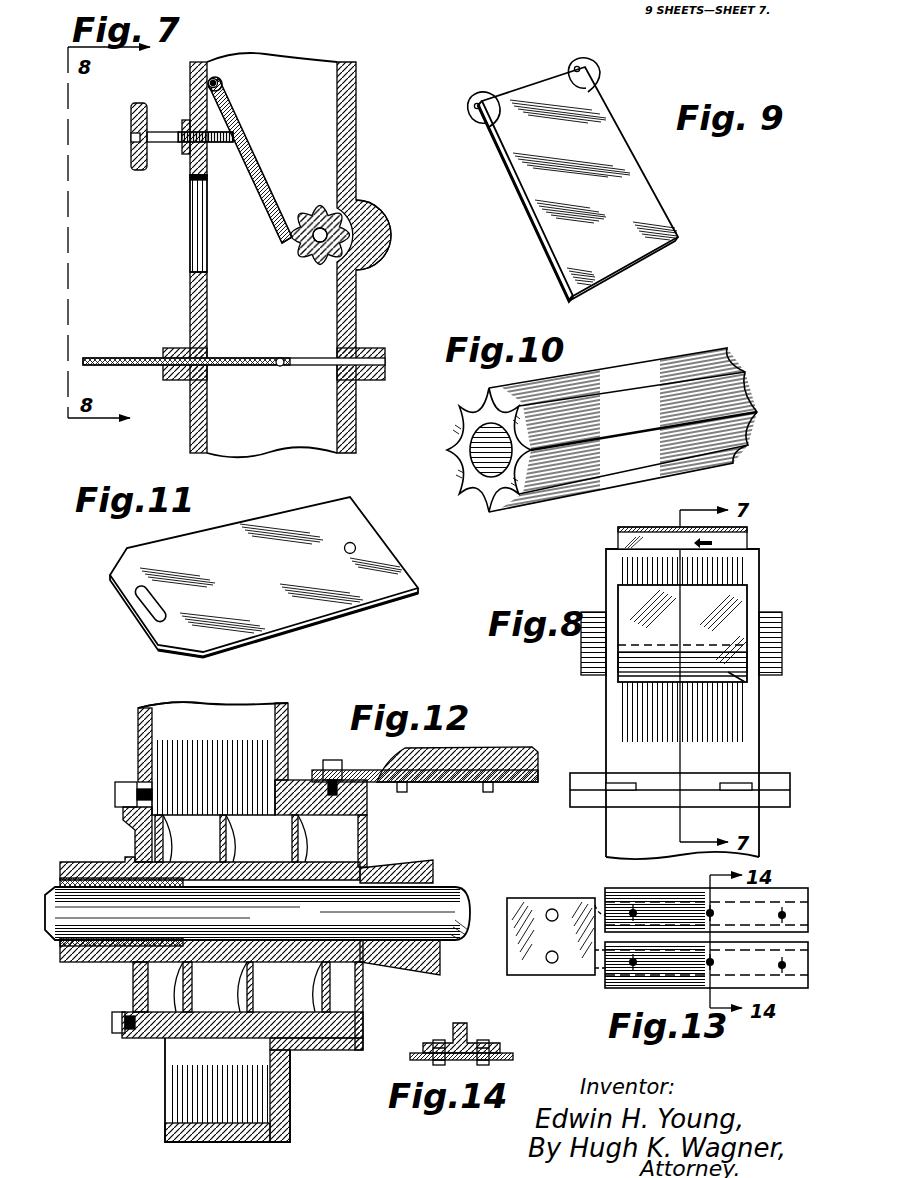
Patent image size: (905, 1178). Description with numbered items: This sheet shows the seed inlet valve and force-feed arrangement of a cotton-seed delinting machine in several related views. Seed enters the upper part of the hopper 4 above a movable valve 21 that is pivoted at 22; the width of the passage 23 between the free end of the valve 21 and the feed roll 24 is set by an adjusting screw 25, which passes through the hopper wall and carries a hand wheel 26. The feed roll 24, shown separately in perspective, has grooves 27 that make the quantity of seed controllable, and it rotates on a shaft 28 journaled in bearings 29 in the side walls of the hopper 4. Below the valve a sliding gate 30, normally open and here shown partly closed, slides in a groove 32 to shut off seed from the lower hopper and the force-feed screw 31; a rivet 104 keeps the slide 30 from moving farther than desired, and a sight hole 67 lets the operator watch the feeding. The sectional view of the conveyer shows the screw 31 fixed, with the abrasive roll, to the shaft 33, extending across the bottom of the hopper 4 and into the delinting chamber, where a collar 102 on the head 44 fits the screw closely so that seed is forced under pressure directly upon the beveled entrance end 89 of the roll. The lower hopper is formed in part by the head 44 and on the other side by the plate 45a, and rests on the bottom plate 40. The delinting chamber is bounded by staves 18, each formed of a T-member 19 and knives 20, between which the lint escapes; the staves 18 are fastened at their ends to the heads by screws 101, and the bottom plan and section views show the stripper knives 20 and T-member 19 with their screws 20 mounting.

In FIG. 7, the hopper 4 is at (316, 80).
In FIG. 8, the hopper 4 is at (759, 597).
In FIG. 12, the hopper 4 is at (213, 758).
In FIG. 12, the staves 18 is at (348, 772).
In FIG. 13, the staves 18 is at (556, 936).
In FIG. 14, the staves 18 is at (470, 1066).
In FIG. 12, the T-member 19 is at (470, 752).
In FIG. 14, the T-member 19 is at (465, 1030).
In FIG. 12, the knives 20 is at (442, 794).
In FIG. 13, the knives 20 is at (706, 938).
In FIG. 14, the knives 20 is at (430, 1058).
In FIG. 7, the movable valve 21 is at (262, 180).
In FIG. 9, the movable valve 21 is at (573, 179).
In FIG. 8, the movable valve 21 is at (740, 546).
In FIG. 7, the pivot 22 is at (215, 78).
In FIG. 7, the passage 23 is at (285, 248).
In FIG. 7, the feed roll 24 is at (318, 263).
In FIG. 10, the feed roll 24 is at (448, 455).
In FIG. 8, the feed roll 24 is at (740, 680).
In FIG. 7, the adjusting screw 25 is at (217, 148).
In FIG. 7, the hand wheel 26 is at (134, 170).
In FIG. 7, the grooves 27 is at (300, 226).
In FIG. 10, the grooves 27 is at (623, 430).
In FIG. 8, the grooves 27 is at (640, 663).
In FIG. 7, the shaft 28 is at (360, 228).
In FIG. 8, the bearings 29 is at (592, 650).
In FIG. 7, the sliding gate 30 is at (234, 368).
In FIG. 11, the sliding gate 30 is at (264, 577).
In FIG. 8, the sliding gate 30 is at (700, 785).
In FIG. 12, the force-feed screw 31 is at (230, 855).
In FIG. 7, the groove 32 is at (308, 368).
In FIG. 8, the groove 32 is at (600, 786).
In FIG. 12, the shaft 33 is at (445, 905).
In FIG. 12, the bottom plate 40 is at (160, 1043).
In FIG. 12, the head 44 is at (227, 1090).
In FIG. 12, the plate 45a is at (153, 738).
In FIG. 7, the sight hole 67 is at (200, 243).
In FIG. 12, the beveled entrance end 89 is at (390, 867).
In FIG. 12, the screws 101 is at (330, 760).
In FIG. 12, the collar 102 is at (302, 822).
In FIG. 7, the rivet 104 is at (284, 357).
In FIG. 11, the rivet 104 is at (358, 545).